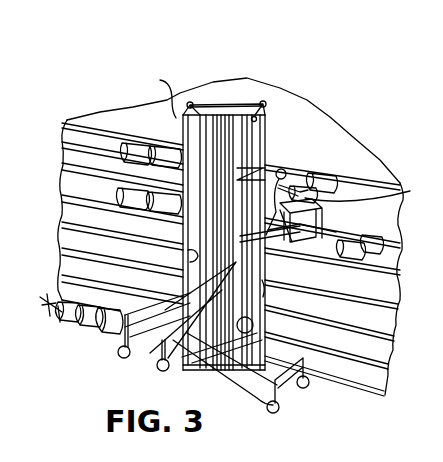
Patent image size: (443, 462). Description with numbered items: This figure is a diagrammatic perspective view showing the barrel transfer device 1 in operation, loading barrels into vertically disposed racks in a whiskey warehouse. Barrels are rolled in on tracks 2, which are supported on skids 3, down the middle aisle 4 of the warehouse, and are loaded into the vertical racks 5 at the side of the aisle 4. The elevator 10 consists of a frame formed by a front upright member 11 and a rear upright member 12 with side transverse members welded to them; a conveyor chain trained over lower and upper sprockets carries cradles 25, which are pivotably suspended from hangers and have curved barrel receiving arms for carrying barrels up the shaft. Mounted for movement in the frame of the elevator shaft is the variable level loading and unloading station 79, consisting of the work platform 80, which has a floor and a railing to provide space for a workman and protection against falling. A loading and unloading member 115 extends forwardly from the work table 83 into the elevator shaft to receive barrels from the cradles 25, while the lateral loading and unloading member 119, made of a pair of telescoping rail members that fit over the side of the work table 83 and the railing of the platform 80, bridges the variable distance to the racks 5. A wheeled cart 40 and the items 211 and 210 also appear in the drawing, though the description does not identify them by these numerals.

The barrel transfer device 1 is at (342, 111).
The elevator 10 is at (297, 62).
The front upright member 11 is at (158, 95).
The rear upright member 12 is at (268, 142).
The vertical racks 5 is at (72, 238).
The loading and unloading member 115 is at (284, 196).
The lateral loading and unloading member 119 is at (373, 193).
The work platform 80 is at (318, 228).
The work table 83 is at (303, 242).
The variable level loading and unloading station 79 is at (283, 260).
The cradles 25 is at (264, 297).
The wheeled cart 40 is at (157, 362).
The skids 3 is at (78, 335).
The tracks 2 is at (50, 312).
The middle aisle 4 is at (331, 417).
The conveyor 211 is at (0, 388).
The conveyor 210 is at (14, 453).